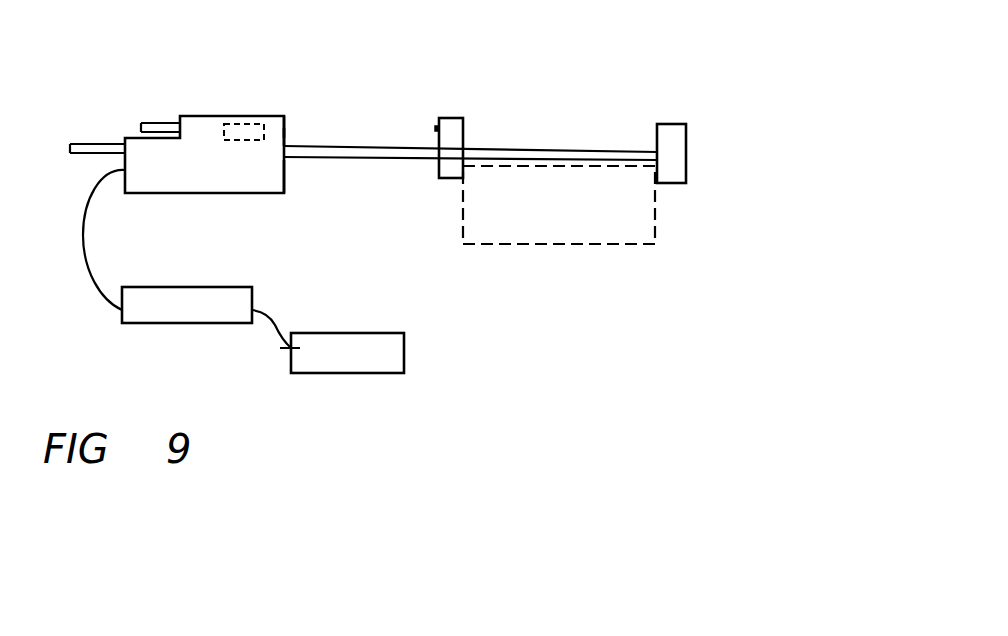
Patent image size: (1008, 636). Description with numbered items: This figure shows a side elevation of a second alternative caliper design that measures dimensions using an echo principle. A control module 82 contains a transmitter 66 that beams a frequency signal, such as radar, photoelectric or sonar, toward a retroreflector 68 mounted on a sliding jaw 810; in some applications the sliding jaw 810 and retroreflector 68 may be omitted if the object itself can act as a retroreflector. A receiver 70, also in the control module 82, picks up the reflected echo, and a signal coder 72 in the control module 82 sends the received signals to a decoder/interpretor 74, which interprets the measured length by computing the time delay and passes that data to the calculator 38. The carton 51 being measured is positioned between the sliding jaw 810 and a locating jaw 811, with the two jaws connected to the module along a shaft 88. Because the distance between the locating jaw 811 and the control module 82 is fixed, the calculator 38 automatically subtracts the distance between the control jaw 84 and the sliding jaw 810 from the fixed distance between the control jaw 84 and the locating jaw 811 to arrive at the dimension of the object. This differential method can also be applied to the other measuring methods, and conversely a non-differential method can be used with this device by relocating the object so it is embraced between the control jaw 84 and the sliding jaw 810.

The calculator 38 is at (405, 352).
The carton 51 is at (657, 215).
The transmitter 66 is at (288, 118).
The retroreflector 68 is at (435, 127).
The receiver 70 is at (287, 133).
The signal coder 72 is at (243, 123).
The decoder/interpretor 74 is at (163, 323).
The control module 82 is at (205, 194).
The control jaw 84 is at (285, 173).
The shaft 88 is at (372, 161).
The sliding jaw 810 is at (461, 118).
The locating jaw 811 is at (687, 138).